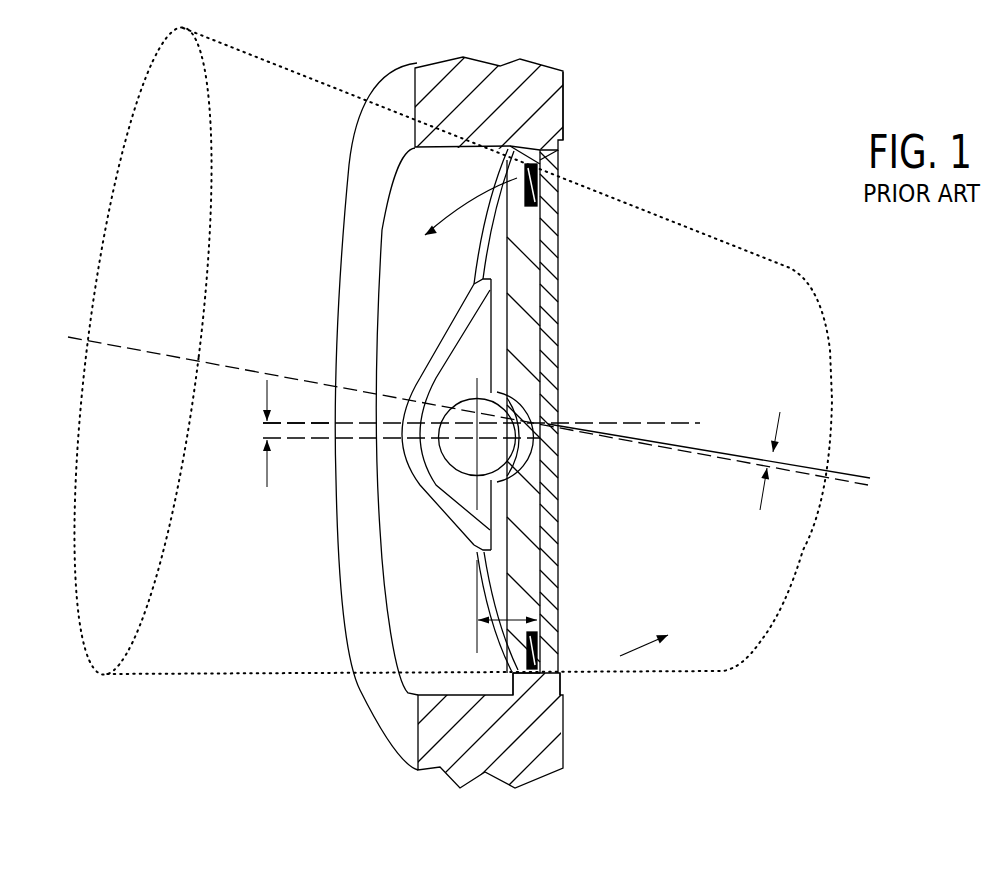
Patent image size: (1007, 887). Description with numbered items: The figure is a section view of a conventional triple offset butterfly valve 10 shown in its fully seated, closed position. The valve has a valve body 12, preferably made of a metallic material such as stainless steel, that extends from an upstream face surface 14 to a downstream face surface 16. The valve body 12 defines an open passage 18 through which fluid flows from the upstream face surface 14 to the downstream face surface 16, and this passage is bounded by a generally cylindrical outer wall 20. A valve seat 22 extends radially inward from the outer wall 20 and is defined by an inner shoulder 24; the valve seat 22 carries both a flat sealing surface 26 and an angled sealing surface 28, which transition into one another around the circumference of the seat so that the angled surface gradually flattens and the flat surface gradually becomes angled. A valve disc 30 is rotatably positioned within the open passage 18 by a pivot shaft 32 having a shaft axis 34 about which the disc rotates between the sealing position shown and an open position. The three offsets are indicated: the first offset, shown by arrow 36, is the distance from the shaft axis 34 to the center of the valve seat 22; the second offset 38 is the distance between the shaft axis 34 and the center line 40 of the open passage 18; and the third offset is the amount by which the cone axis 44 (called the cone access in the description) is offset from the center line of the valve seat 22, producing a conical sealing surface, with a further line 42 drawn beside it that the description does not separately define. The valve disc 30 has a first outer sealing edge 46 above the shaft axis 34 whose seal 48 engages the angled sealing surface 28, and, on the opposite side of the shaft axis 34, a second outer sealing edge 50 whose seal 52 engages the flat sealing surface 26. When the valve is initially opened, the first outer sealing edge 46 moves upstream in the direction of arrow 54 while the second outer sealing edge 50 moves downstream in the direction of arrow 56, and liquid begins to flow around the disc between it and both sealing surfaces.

The triple offset butterfly valve 10 is at (620, 118).
The valve body 12 is at (473, 73).
The upstream face surface 14 is at (393, 85).
The downstream face surface 16 is at (563, 82).
The open passage 18 is at (403, 220).
The outer wall 20 is at (427, 695).
The valve seat 22 is at (560, 685).
The inner shoulder 24 is at (483, 665).
The flat sealing surface 26 is at (563, 653).
The angled sealing surface 28 is at (547, 175).
The valve disc 30 is at (530, 333).
The pivot shaft 32 is at (457, 455).
The shaft axis 34 is at (478, 440).
The first offset arrow 36 is at (512, 612).
The second offset 38 is at (260, 433).
The center line 40 is at (292, 422).
The tilted axis 42 is at (873, 477).
The cone axis 44 is at (837, 478).
The first outer sealing edge 46 is at (520, 176).
The seal 48 is at (543, 185).
The second outer sealing edge 50 is at (530, 677).
The seal 52 is at (560, 640).
The arrow 54 is at (520, 176).
The arrow 56 is at (573, 660).